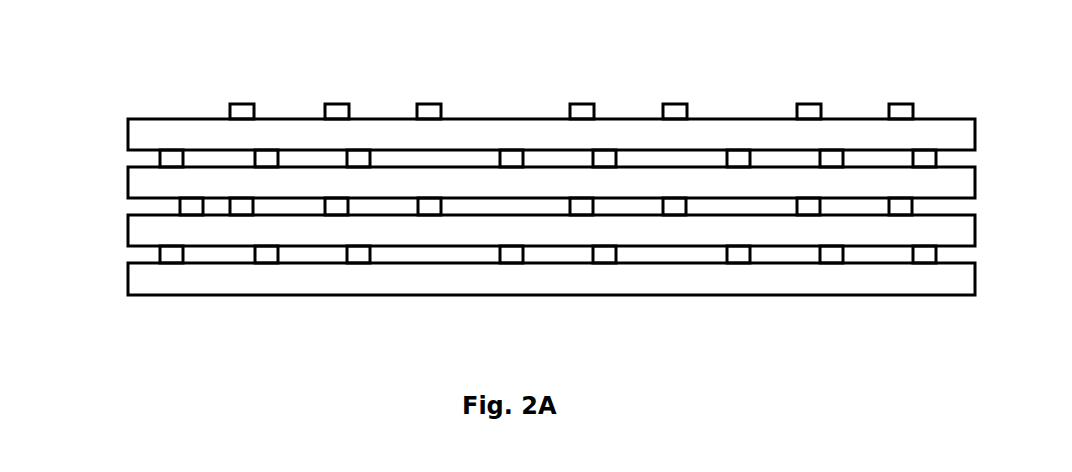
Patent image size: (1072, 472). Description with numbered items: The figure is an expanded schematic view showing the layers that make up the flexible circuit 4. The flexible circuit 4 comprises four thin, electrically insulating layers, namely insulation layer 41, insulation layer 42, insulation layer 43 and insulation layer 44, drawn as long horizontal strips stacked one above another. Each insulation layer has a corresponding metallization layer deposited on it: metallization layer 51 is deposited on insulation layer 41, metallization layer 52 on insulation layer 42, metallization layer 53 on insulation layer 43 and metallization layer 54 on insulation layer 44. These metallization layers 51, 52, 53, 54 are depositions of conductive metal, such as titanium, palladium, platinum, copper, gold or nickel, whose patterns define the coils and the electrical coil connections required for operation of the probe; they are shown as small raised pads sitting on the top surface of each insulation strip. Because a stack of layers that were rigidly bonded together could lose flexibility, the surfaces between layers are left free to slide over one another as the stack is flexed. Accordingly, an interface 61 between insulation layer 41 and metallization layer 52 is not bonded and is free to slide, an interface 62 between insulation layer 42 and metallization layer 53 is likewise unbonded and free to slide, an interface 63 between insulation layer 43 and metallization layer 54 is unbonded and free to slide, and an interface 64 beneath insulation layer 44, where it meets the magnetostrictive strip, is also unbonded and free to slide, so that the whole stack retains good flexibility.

The flexible circuit 4 is at (638, 43).
The insulation layer 41 is at (965, 138).
The insulation layer 42 is at (965, 190).
The insulation layer 43 is at (965, 240).
The insulation layer 44 is at (965, 288).
The metallization layer 51 is at (228, 104).
The metallization layer 52 is at (515, 158).
The metallization layer 53 is at (333, 205).
The metallization layer 54 is at (267, 250).
The interface 61 is at (134, 150).
The interface 62 is at (134, 199).
The interface 63 is at (134, 247).
The interface 64 is at (134, 295).